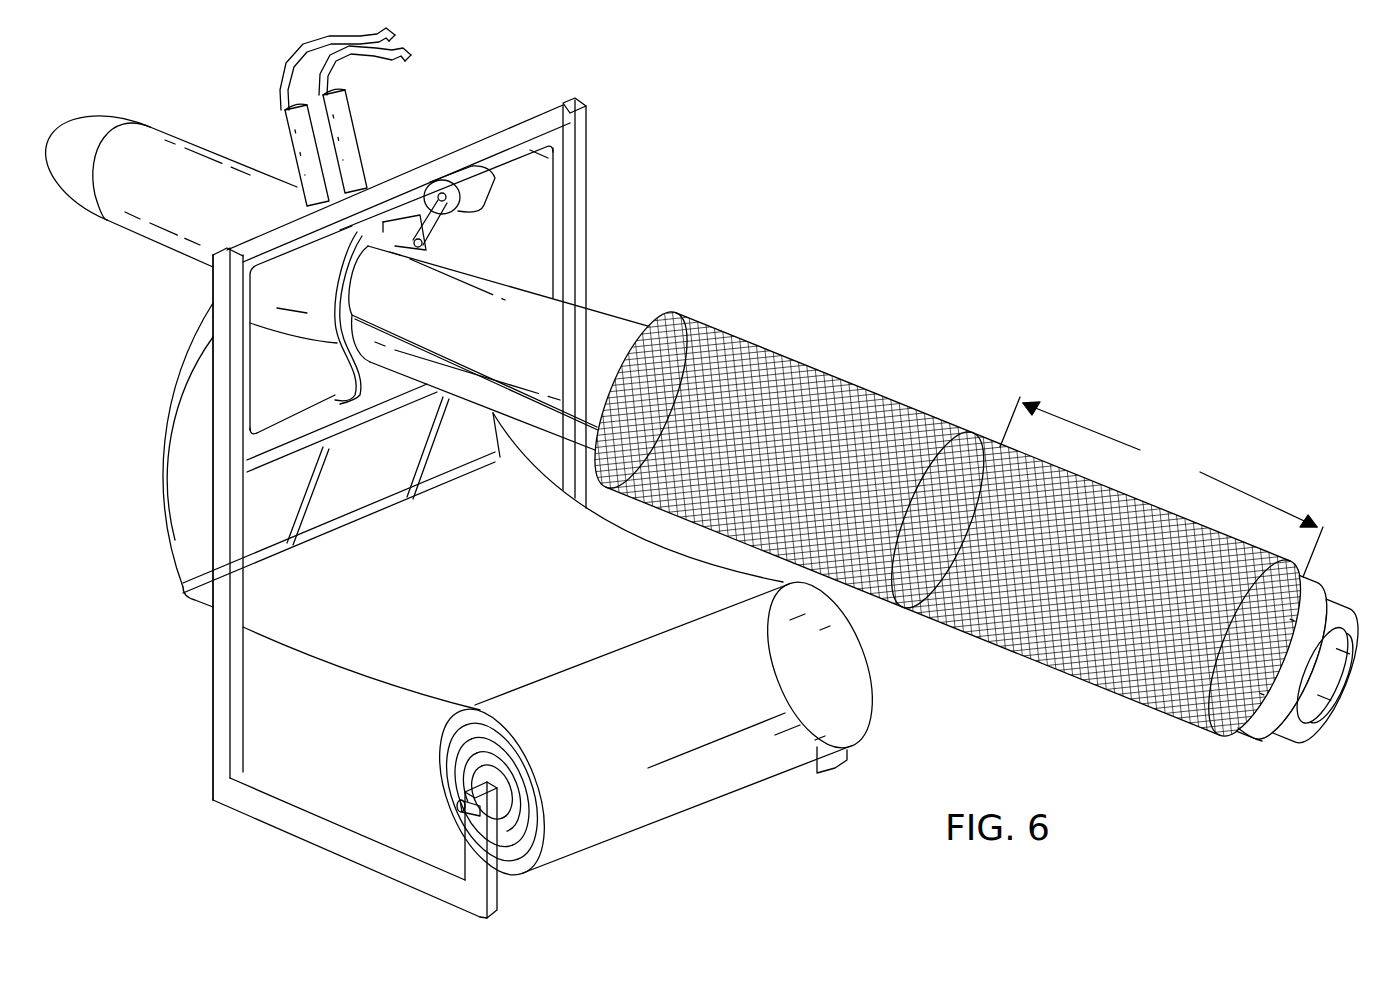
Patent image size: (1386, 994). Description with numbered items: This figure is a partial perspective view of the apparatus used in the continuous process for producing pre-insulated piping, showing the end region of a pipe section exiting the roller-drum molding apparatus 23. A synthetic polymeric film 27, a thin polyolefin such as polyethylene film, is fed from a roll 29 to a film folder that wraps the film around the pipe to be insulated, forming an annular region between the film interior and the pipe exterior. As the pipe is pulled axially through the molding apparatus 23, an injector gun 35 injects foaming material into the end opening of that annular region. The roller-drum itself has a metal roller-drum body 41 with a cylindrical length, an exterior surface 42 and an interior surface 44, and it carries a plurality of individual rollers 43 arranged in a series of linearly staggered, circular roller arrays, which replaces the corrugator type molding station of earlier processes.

The molding apparatus 23 is at (978, 541).
The synthetic polymeric film 27 is at (333, 680).
The roll 29 is at (877, 683).
The injector gun 35 is at (367, 132).
The metal roller-drum body 41 is at (1322, 675).
The exterior surface 42 is at (1289, 662).
The individual rollers 43 is at (948, 524).
The interior surface 44 is at (1252, 737).